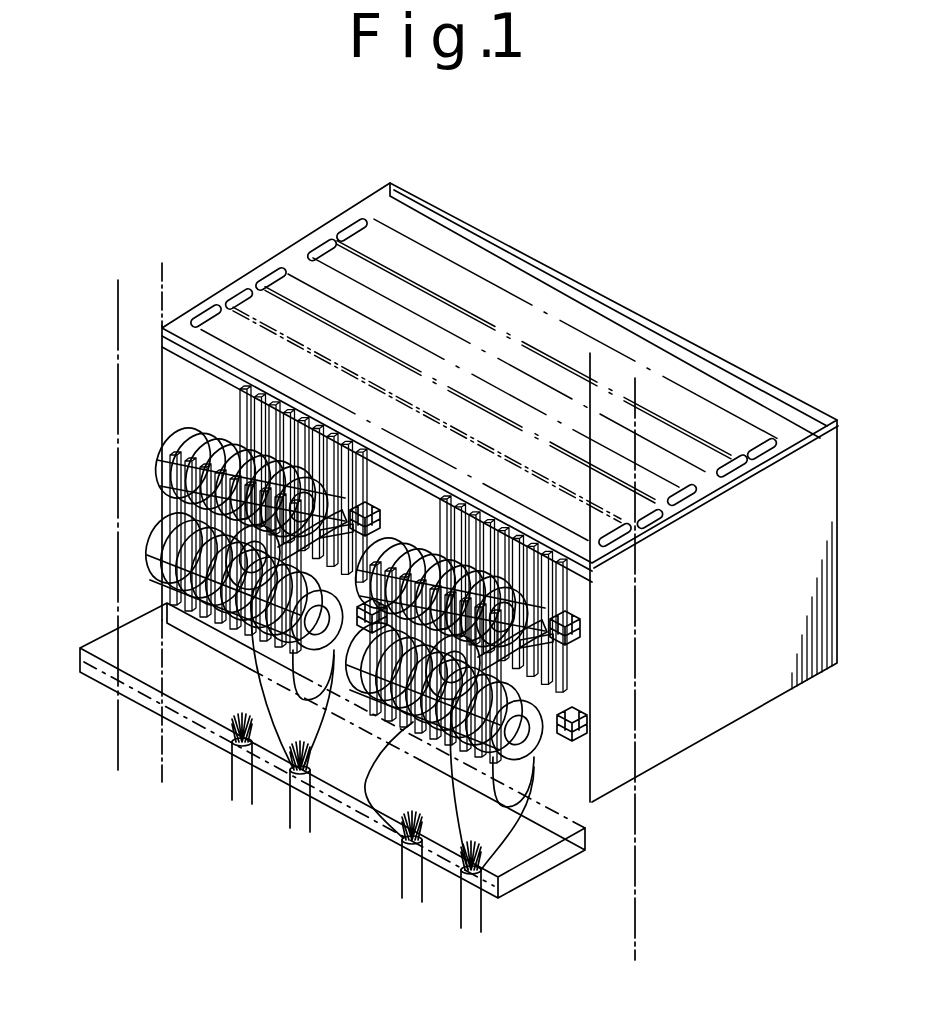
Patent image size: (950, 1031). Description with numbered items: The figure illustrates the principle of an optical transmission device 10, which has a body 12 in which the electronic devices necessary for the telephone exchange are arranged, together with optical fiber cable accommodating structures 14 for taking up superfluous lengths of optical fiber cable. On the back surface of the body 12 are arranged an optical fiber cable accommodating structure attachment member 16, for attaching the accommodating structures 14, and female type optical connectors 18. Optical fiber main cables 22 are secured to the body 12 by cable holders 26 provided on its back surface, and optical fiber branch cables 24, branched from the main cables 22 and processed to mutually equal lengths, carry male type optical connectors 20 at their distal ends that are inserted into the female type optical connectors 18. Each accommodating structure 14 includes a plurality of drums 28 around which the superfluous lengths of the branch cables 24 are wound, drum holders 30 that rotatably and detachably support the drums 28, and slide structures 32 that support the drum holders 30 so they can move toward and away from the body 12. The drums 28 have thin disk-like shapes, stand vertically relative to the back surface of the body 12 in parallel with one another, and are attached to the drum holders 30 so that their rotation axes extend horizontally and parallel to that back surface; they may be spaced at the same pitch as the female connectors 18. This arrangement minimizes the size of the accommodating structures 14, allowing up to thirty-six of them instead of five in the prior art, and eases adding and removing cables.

The optical transmission device 10 is at (670, 240).
The body 12 is at (703, 397).
The optical fiber cable accommodating structure 14 is at (578, 592).
The optical fiber cable accommodating structure attachment member 16 is at (200, 350).
The female type optical connector 18 is at (555, 724).
The male type optical connector 20 is at (545, 772).
The optical fiber main cable 22 is at (487, 917).
The optical fiber branch cable 24 is at (447, 870).
The cable holder 26 is at (150, 700).
The drum 28 is at (540, 828).
The drum holder 30 is at (360, 802).
The slide structure 32 is at (590, 648).